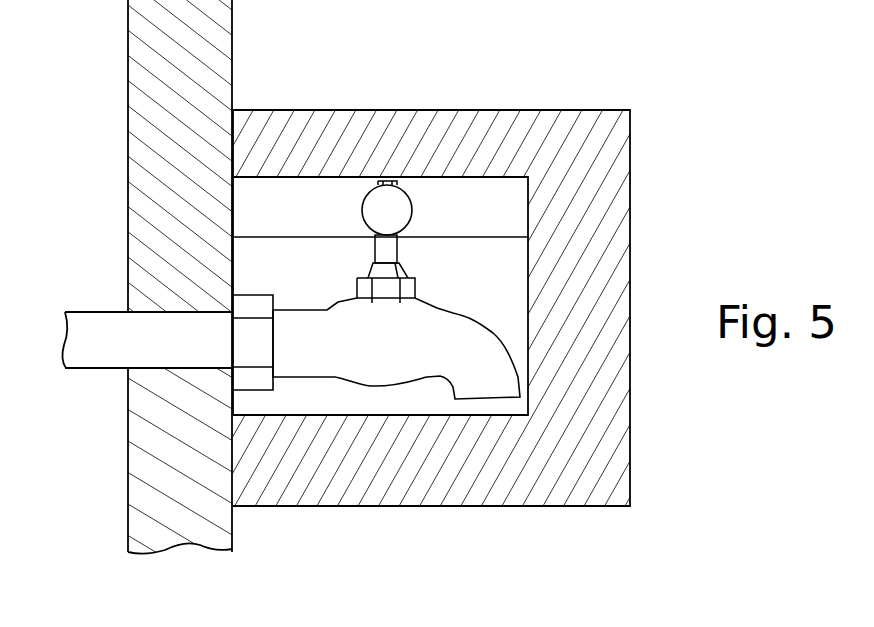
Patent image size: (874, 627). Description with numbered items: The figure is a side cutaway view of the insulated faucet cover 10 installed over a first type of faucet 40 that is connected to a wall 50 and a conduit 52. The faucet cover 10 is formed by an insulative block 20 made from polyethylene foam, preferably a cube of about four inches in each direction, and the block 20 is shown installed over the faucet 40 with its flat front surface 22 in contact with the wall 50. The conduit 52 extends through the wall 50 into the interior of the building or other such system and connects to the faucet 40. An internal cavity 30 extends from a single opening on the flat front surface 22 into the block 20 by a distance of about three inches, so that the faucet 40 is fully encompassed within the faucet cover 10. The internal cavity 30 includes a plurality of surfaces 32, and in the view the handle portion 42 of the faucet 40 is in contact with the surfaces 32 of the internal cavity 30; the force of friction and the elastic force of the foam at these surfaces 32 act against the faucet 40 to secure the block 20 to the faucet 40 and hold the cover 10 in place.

The insulated faucet cover 10 is at (712, 474).
The insulative block 20 is at (612, 148).
The flat front surface 22 is at (234, 162).
The internal cavity 30 is at (475, 257).
The plurality of surfaces 32 is at (407, 236).
The faucet 40 is at (348, 355).
The handle portion 42 is at (372, 215).
The wall 50 is at (163, 203).
The conduit 52 is at (88, 355).